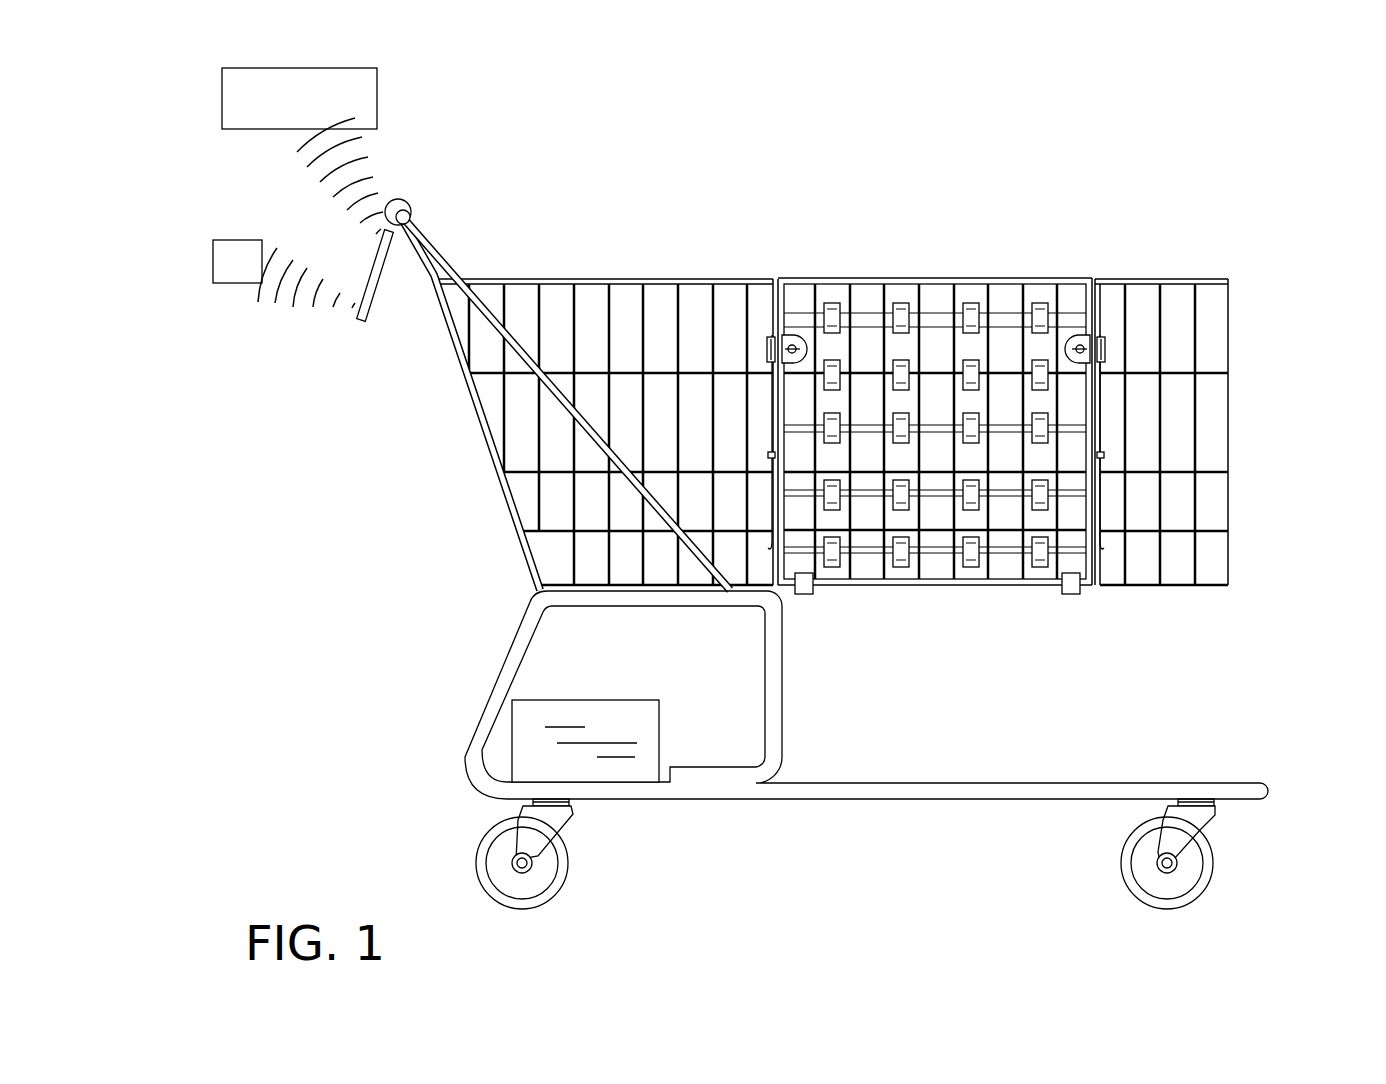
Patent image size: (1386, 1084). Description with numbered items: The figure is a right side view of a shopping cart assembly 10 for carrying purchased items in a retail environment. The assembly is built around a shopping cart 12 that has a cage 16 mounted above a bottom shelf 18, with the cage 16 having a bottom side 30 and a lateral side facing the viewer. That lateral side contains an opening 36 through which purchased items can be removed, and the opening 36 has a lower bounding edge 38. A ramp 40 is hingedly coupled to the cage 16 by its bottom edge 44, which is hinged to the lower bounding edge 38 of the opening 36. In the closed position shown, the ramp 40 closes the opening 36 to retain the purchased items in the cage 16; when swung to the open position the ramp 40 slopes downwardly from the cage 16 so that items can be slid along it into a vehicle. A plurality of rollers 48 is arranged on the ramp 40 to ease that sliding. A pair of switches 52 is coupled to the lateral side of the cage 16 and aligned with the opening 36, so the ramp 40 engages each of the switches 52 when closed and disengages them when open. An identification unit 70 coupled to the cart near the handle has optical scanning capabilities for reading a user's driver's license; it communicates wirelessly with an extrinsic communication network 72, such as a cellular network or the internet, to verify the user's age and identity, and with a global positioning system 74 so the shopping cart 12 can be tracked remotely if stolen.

The shopping cart assembly 10 is at (866, 504).
The shopping cart 12 is at (891, 439).
The cage 16 is at (597, 280).
The bottom shelf 18 is at (1155, 783).
The bottom side 30 is at (1145, 592).
The opening 36 is at (1097, 408).
The lower bounding edge 38 is at (867, 583).
The ramp 40 is at (937, 439).
The bottom edge 44 is at (1030, 580).
The rollers 48 is at (971, 495).
The switches 52 is at (771, 340).
The identification unit 70 is at (368, 268).
The extrinsic communication network 72 is at (222, 98).
The global positioning system 74 is at (213, 258).